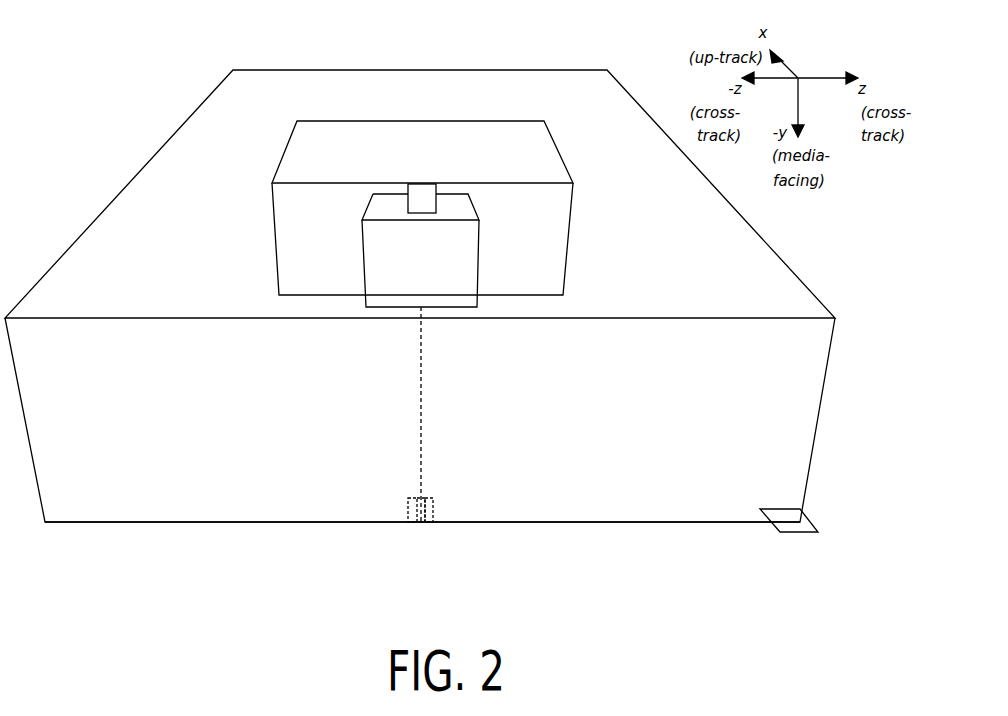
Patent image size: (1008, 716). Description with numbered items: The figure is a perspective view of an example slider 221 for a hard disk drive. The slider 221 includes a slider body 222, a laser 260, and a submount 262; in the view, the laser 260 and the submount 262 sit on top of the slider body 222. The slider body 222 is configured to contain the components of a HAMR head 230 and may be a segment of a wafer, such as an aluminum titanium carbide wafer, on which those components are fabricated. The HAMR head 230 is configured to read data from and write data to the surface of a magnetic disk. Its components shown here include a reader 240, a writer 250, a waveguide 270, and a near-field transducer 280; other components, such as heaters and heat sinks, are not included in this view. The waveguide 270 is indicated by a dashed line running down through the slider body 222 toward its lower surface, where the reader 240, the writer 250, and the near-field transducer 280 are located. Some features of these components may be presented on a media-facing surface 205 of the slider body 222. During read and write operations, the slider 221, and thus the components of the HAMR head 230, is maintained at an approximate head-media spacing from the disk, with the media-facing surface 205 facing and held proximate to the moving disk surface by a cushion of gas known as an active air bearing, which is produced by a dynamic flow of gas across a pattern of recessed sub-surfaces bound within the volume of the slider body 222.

The slider 221 is at (115, 137).
The slider body 222 is at (606, 102).
The submount 262 is at (285, 240).
The laser 260 is at (465, 268).
The HAMR head 230 is at (452, 430).
The waveguide 270 is at (420, 467).
The reader 240 is at (415, 507).
The writer 250 is at (430, 507).
The near-field transducer 280 is at (425, 522).
The media-facing surface 205 is at (802, 527).